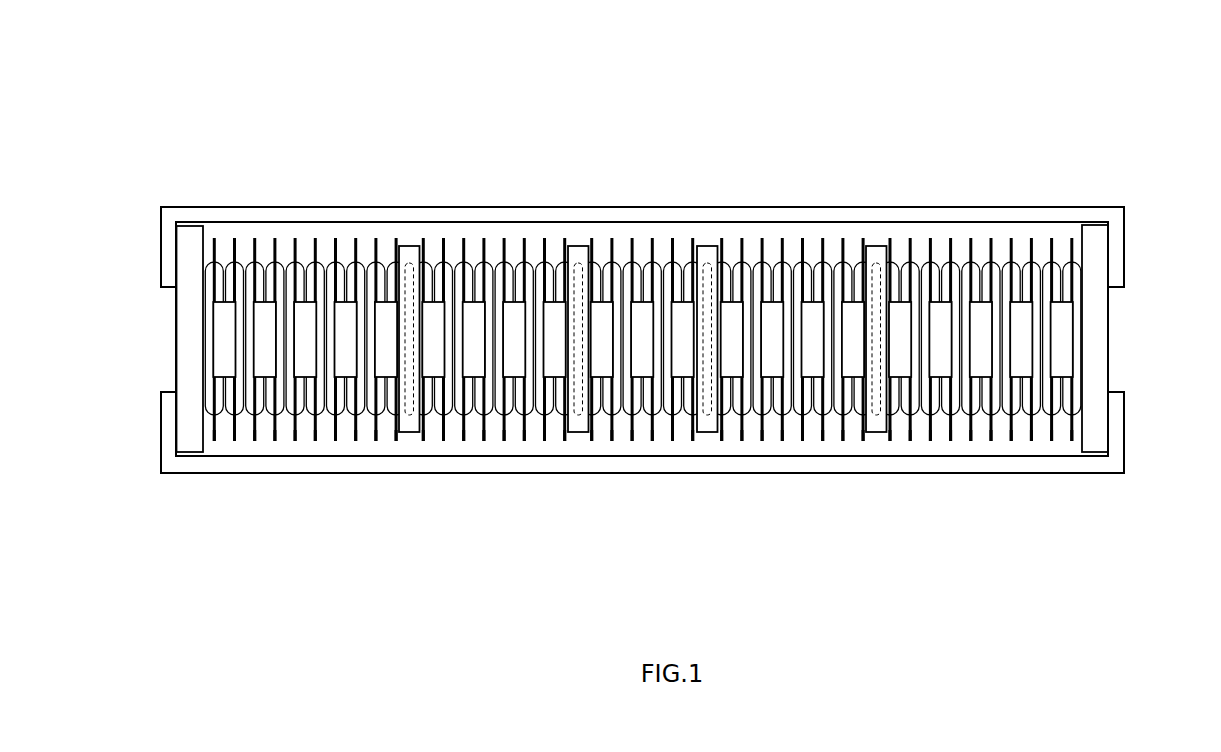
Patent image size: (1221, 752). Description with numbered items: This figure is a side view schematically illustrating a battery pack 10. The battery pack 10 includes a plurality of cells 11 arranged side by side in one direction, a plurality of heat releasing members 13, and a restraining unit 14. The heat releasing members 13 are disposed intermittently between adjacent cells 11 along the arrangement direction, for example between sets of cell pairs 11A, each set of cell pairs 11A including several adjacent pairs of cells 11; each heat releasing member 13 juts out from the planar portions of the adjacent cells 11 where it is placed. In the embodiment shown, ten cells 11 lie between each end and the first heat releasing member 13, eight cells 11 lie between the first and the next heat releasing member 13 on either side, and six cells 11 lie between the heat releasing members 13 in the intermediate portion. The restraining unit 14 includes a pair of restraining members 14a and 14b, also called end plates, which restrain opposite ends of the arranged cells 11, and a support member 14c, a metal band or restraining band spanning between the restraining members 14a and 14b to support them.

The battery pack 10 is at (980, 117).
The cell 11 is at (222, 262).
The cell pair 11A is at (652, 483).
The heat releasing member 13 is at (408, 245).
The restraining unit 14 is at (1151, 200).
The restraining member 14a is at (176, 323).
The restraining member 14b is at (1108, 328).
The support member 14c is at (1057, 207).